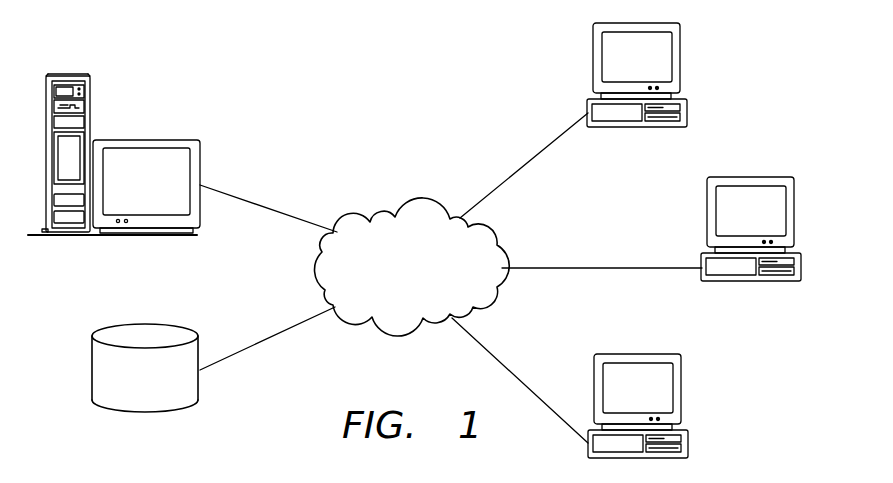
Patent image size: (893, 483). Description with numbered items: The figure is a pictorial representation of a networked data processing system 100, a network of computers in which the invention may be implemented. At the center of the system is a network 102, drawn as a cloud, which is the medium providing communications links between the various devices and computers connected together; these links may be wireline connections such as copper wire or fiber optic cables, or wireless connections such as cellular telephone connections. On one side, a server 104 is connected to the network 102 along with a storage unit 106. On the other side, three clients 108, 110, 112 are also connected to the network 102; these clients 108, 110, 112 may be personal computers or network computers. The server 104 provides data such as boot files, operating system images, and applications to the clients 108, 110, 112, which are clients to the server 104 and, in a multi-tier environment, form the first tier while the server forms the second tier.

The networked data processing system 100 is at (282, 60).
The network 102 is at (430, 282).
The server 104 is at (92, 97).
The storage unit 106 is at (92, 367).
The client 108 is at (680, 67).
The client 110 is at (795, 218).
The client 112 is at (682, 395).